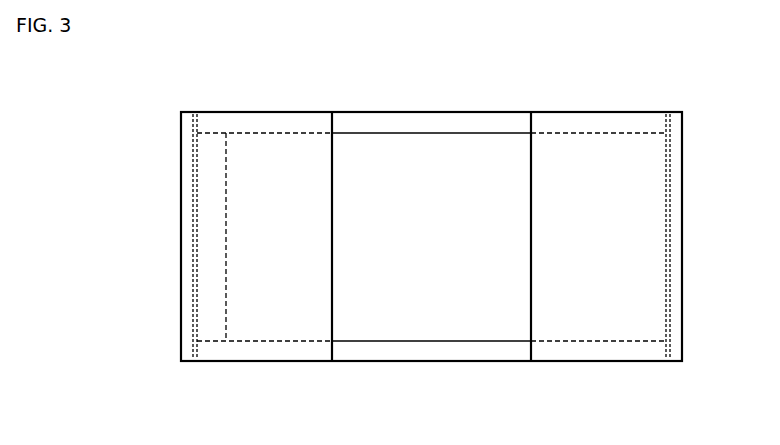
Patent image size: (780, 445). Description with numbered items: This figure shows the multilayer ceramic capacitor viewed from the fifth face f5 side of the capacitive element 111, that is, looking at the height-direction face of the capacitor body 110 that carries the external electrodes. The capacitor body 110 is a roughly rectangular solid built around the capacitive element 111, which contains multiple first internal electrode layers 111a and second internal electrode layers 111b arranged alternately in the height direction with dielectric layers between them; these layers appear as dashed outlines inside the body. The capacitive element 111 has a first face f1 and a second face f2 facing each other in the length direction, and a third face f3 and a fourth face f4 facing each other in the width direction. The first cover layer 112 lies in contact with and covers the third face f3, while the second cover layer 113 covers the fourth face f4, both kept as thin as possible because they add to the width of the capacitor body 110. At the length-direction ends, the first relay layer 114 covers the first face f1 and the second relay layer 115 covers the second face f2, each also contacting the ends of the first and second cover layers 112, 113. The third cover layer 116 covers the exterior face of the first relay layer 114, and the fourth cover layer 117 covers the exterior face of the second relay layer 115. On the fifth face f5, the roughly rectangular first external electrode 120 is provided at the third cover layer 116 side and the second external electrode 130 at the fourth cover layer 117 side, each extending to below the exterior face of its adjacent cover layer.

The capacitor body 110 is at (183, 111).
The capacitive element 111 is at (425, 140).
The first internal electrode layer 111a is at (223, 133).
The second internal electrode layer 111b is at (346, 148).
The first cover layer 112 is at (505, 122).
The second cover layer 113 is at (504, 350).
The first relay layer 114 is at (178, 192).
The second relay layer 115 is at (686, 188).
The third cover layer 116 is at (178, 226).
The fourth cover layer 117 is at (686, 223).
The first external electrode 120 is at (259, 268).
The second external electrode 130 is at (604, 268).
The first face f1 is at (205, 138).
The second face f2 is at (665, 145).
The third face f3 is at (383, 133).
The fourth face f4 is at (384, 341).
The fifth face f5 is at (466, 180).